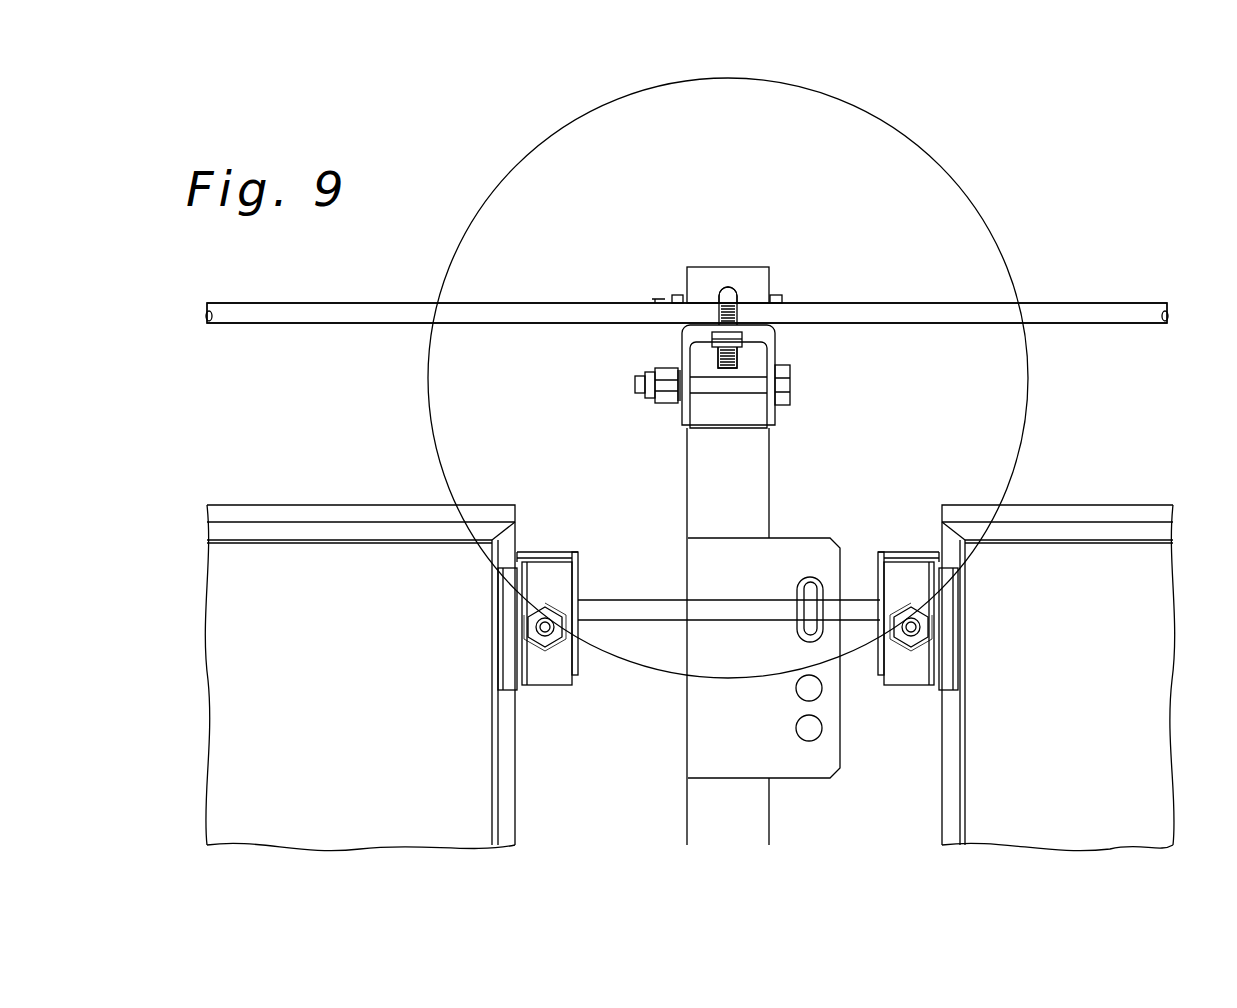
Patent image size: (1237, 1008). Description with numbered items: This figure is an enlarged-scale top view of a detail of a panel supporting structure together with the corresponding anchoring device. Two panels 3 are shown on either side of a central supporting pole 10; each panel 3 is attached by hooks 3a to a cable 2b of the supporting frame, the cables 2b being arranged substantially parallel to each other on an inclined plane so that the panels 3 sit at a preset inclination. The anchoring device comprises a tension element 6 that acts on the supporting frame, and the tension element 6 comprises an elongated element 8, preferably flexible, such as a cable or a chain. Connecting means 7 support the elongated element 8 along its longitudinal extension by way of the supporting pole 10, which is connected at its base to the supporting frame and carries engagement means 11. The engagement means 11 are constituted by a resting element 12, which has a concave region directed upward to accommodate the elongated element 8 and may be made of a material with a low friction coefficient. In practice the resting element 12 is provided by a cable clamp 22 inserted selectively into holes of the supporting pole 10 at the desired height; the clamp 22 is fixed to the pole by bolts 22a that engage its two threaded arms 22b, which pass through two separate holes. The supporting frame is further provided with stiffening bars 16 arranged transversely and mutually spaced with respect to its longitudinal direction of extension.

The panel 3 is at (233, 698).
The hook 3a is at (552, 672).
The cable 2b is at (673, 610).
The tension element 6 is at (1110, 304).
The connecting means 7 is at (677, 418).
The elongated element 8 is at (928, 312).
The supporting pole 10 is at (770, 383).
The engagement means 11 is at (749, 281).
The resting element 12 is at (726, 291).
The stiffening bar 16 is at (752, 520).
The cable clamp 22 is at (727, 297).
The bolt 22a is at (743, 337).
The threaded arm 22b is at (728, 368).